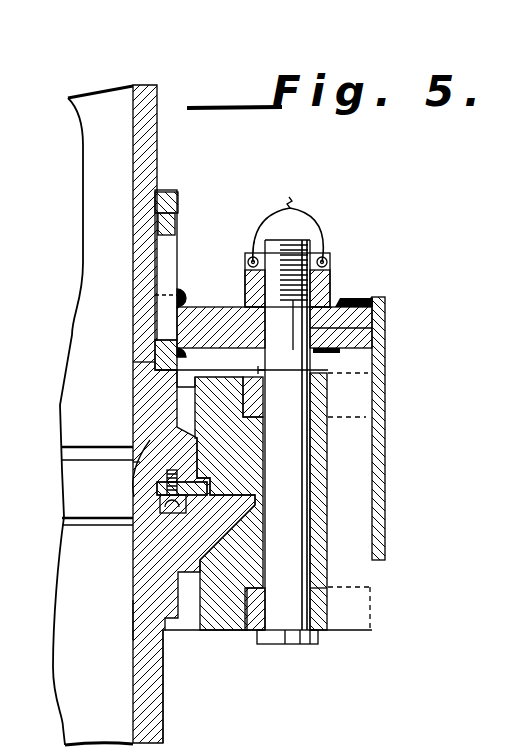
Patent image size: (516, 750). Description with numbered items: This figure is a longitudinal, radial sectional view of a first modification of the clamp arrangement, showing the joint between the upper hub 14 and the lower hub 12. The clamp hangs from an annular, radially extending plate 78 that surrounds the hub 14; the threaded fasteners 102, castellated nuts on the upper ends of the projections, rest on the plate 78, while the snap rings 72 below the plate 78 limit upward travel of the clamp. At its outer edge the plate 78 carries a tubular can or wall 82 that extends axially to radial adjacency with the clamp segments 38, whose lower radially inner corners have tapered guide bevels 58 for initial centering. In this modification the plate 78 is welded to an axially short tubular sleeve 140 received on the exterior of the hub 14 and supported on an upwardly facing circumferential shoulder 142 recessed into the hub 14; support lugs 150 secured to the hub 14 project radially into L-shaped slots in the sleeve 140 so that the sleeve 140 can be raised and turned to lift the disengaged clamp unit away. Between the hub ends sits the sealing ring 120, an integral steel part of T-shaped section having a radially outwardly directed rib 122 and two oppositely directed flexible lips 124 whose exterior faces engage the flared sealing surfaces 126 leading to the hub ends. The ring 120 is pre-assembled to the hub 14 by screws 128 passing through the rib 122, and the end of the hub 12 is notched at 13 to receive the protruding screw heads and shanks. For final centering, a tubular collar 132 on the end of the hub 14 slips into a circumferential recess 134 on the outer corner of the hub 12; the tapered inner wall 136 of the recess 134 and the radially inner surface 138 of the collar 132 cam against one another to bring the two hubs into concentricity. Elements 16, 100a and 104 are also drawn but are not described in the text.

The hub 12 is at (160, 700).
The groove or notch 13 is at (137, 610).
The hub 14 is at (150, 181).
The wall plate 16 is at (150, 148).
The clamp segments 38 is at (327, 568).
The tapered guide bevels 58 is at (195, 628).
The snap rings 72 is at (385, 373).
The plate 78 is at (345, 300).
The can or wall 82 is at (385, 450).
The flange block 100a is at (385, 327).
The threaded fasteners 102 is at (340, 290).
The flange plate 104 is at (358, 489).
The sealing ring 120 is at (78, 495).
The rib 122 is at (293, 435).
The lips 124 is at (137, 557).
The flared sealing surfaces 126 is at (133, 450).
The screws 128 is at (133, 490).
The collar 132 is at (228, 520).
The circumferential recess 134 is at (227, 517).
The inner wall 136 is at (225, 505).
The inner surface 138 is at (230, 490).
The sleeve 140 is at (178, 201).
The shoulder 142 is at (150, 366).
The support lugs 150 is at (175, 225).